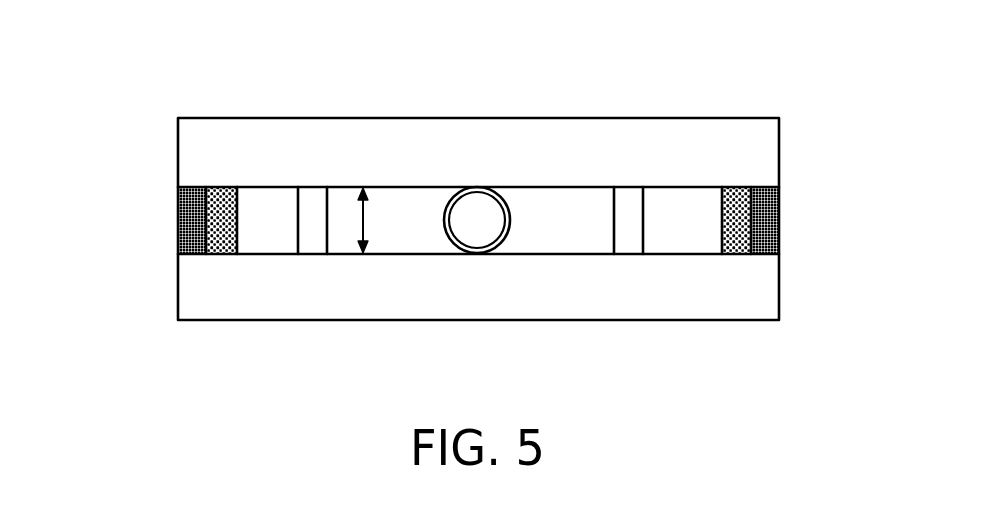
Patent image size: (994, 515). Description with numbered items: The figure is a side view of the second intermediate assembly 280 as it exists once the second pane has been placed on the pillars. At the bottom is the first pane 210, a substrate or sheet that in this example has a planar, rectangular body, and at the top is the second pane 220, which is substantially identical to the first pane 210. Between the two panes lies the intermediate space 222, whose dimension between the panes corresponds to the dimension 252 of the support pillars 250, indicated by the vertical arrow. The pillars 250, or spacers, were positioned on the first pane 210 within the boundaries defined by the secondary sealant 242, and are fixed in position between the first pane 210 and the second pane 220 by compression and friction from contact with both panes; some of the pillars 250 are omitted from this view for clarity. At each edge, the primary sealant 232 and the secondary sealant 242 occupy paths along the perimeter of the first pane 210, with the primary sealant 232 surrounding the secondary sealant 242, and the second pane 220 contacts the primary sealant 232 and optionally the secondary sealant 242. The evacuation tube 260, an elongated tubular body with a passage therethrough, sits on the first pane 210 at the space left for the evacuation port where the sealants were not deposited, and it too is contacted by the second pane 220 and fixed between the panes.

The second intermediate assembly 280 is at (146, 106).
The second pane 220 is at (272, 118).
The first pane 210 is at (703, 322).
The intermediate space 222 is at (590, 236).
The primary sealant 232 is at (187, 235).
The secondary sealant 242 is at (217, 222).
The support pillars 250 is at (314, 243).
The dimension of the pillars 252 is at (367, 220).
The evacuation tube 260 is at (497, 244).